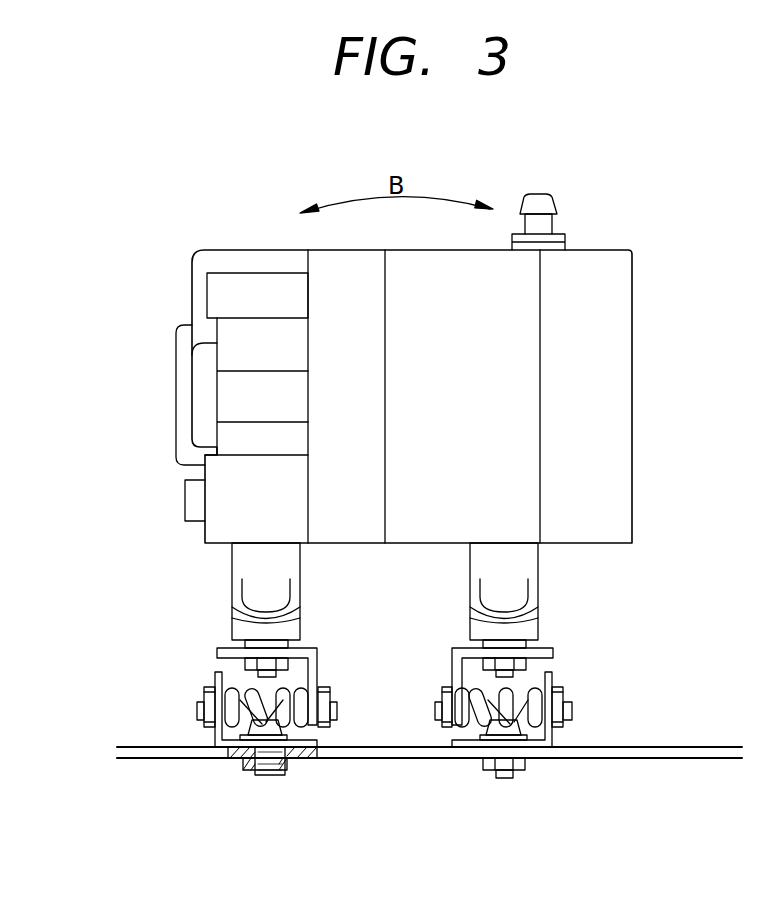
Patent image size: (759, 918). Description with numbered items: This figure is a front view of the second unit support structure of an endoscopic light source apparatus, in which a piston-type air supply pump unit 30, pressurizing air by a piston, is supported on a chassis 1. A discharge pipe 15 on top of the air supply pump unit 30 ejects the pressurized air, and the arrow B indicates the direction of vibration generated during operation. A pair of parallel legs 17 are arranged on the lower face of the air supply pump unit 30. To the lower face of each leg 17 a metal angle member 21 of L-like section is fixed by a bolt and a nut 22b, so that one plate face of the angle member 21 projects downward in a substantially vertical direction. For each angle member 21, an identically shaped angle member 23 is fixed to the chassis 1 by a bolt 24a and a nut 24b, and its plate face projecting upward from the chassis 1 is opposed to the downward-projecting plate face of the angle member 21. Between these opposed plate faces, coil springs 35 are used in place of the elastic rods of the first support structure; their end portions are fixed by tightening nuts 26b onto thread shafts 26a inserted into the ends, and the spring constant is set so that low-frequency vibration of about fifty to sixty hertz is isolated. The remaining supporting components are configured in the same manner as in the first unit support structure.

The chassis 1 is at (415, 755).
The discharge pipe 15 is at (548, 201).
The leg 17 is at (237, 628).
The angle member 21 is at (320, 668).
The nut 22b is at (280, 665).
The angle member 23 is at (212, 736).
The bolt 24a is at (265, 776).
The nut 24b is at (282, 770).
The thread shaft 26a is at (200, 707).
The nut 26b is at (203, 726).
The air supply pump unit 30 is at (638, 234).
The coil spring 35 is at (263, 692).